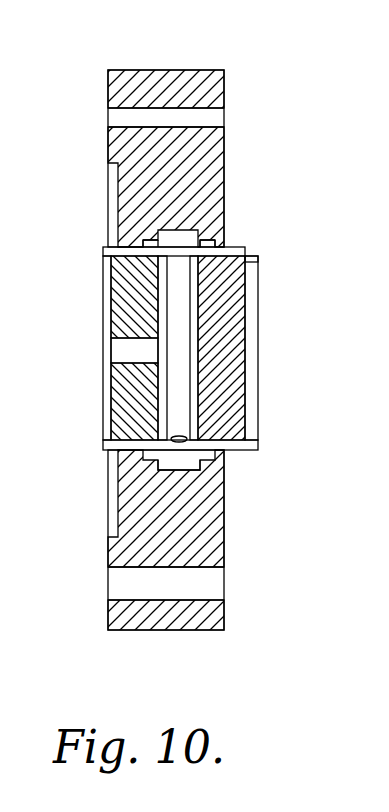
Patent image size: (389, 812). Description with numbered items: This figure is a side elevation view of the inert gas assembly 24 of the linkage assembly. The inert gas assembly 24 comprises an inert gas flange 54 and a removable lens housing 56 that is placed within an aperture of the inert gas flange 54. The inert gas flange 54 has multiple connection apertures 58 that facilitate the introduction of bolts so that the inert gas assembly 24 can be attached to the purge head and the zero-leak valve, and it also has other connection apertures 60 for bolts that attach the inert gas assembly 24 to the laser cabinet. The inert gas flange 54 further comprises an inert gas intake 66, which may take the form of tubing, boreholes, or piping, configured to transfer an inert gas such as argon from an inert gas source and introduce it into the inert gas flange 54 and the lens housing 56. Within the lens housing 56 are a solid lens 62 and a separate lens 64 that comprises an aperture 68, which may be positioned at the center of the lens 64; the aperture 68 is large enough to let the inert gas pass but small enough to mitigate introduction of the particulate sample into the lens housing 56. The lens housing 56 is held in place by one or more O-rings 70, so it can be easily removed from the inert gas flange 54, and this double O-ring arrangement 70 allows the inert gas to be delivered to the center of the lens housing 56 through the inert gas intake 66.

The inert gas assembly 24 is at (233, 58).
The inert gas flange 54 is at (224, 168).
The lens housing 56 is at (245, 254).
The connection apertures 58 is at (224, 583).
The connection apertures 60 is at (219, 117).
The solid lens 62 is at (252, 338).
The lens 64 is at (108, 330).
The inert gas intake 66 is at (185, 467).
The aperture 68 is at (110, 357).
The O-rings 70 is at (145, 247).